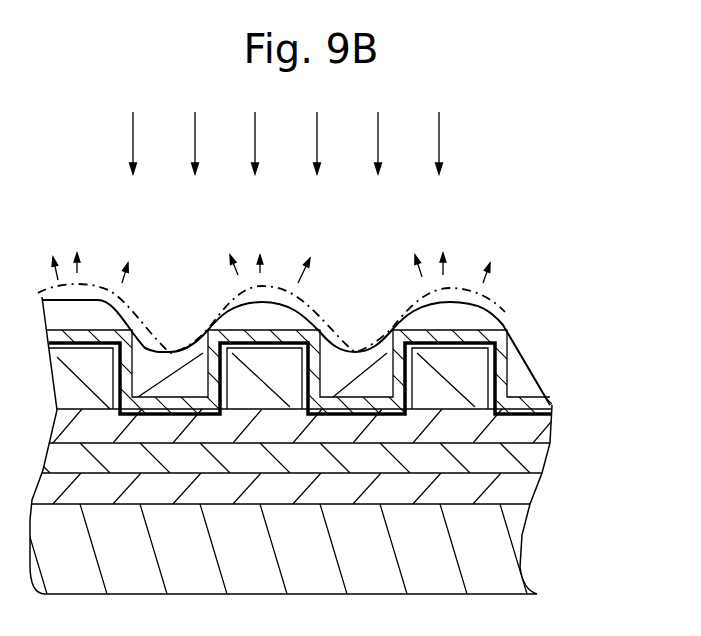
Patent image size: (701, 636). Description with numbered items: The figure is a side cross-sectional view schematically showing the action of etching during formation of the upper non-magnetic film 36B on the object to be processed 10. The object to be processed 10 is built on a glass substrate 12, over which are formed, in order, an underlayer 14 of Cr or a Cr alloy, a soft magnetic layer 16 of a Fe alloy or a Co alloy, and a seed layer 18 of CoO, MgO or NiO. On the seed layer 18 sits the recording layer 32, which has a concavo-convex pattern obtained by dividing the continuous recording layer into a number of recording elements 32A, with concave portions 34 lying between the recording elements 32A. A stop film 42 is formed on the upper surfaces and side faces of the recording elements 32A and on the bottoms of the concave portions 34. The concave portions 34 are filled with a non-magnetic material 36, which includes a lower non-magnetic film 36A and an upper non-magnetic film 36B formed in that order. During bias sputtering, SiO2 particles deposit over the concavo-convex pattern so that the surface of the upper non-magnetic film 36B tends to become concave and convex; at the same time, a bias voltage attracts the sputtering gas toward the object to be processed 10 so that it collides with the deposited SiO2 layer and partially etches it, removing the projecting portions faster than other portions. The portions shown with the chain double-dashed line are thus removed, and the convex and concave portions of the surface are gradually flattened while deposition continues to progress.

The object to be processed 10 is at (284, 255).
The glass substrate 12 is at (522, 528).
The underlayer 14 is at (540, 488).
The soft magnetic layer 16 is at (550, 455).
The seed layer 18 is at (553, 432).
The recording layer 32 is at (554, 372).
The recording elements 32A is at (77, 360).
The concave portions 34 is at (168, 368).
The non-magnetic material 36 is at (578, 157).
The lower non-magnetic film 36A is at (498, 362).
The upper non-magnetic film 36B is at (317, 330).
The stop film 42 is at (500, 373).